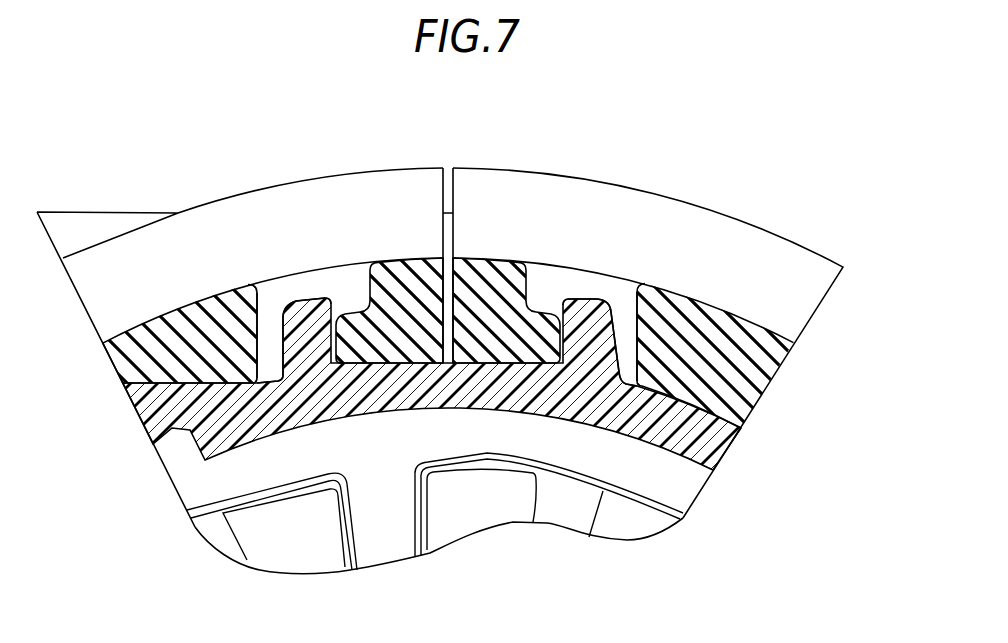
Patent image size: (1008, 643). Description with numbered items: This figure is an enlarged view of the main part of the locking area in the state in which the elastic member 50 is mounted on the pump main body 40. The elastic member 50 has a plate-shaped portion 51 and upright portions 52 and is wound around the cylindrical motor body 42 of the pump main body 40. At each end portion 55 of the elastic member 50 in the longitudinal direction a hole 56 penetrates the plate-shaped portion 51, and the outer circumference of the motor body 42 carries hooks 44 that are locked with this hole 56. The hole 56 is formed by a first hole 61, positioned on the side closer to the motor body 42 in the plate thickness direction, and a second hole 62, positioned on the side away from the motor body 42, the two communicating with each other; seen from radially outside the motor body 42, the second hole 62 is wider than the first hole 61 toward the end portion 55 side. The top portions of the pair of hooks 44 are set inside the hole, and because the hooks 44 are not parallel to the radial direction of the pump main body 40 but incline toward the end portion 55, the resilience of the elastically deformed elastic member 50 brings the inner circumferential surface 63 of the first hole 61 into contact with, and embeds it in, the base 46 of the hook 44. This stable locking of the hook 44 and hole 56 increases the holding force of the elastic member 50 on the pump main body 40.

The pump main body 40 is at (442, 434).
The motor body 42 is at (720, 440).
The hook 44 is at (272, 351).
The base 46 is at (304, 358).
The elastic member 50 is at (470, 334).
The plate-shaped portion 51 is at (748, 393).
The upright portion 52 is at (183, 218).
The end portion 55 is at (412, 258).
The hole 56 is at (419, 281).
The first hole 61 is at (263, 293).
The second hole 62 is at (547, 283).
The inner circumferential surface 63 is at (300, 305).